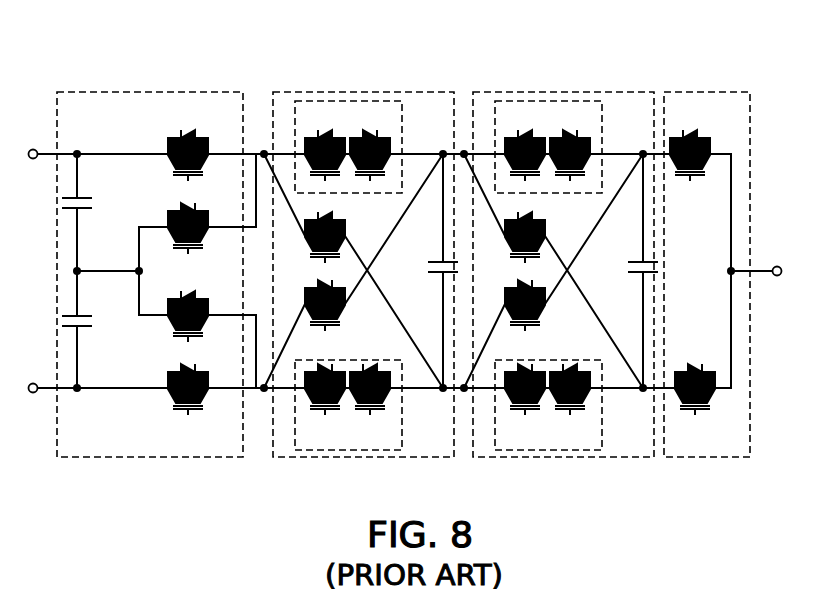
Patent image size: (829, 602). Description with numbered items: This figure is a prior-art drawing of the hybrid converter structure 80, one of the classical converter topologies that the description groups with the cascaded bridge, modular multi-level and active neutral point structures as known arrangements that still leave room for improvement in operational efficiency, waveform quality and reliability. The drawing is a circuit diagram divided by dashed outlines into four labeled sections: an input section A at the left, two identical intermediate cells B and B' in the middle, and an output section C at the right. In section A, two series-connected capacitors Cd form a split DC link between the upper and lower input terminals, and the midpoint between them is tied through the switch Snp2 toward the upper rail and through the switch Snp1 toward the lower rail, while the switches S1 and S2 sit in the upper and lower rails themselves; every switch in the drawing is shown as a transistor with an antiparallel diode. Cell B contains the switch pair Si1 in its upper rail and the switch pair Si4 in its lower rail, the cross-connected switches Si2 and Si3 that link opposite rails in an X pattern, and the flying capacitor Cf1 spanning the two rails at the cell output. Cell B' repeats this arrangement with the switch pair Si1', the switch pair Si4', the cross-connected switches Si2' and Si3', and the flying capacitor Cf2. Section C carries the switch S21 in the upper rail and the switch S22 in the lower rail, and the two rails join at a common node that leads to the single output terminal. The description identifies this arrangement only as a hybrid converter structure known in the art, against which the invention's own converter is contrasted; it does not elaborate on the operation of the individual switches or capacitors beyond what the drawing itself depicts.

The hybrid converter structure 80 is at (403, 234).
The input stage block A is at (150, 274).
The flying capacitor cell B is at (363, 274).
The second flying capacitor cell B' is at (563, 274).
The output stage block C is at (707, 274).
The switch S1 is at (188, 142).
The switch S2 is at (188, 406).
The neutral point switch Snp1 is at (167, 326).
The neutral point switch Snp2 is at (179, 241).
The switch pair Si1 is at (348, 147).
The switch Si2 is at (313, 246).
The switch Si3 is at (335, 316).
The switch pair Si4 is at (348, 405).
The switch pair Si1' is at (548, 147).
The switch Si2' is at (512, 246).
The switch Si3' is at (537, 316).
The switch pair Si4' is at (548, 405).
The switch S21 is at (691, 170).
The switch S22 is at (693, 403).
The DC link capacitor Cd is at (58, 268).
The flying capacitor Cf1 is at (427, 278).
The flying capacitor Cf2 is at (627, 278).